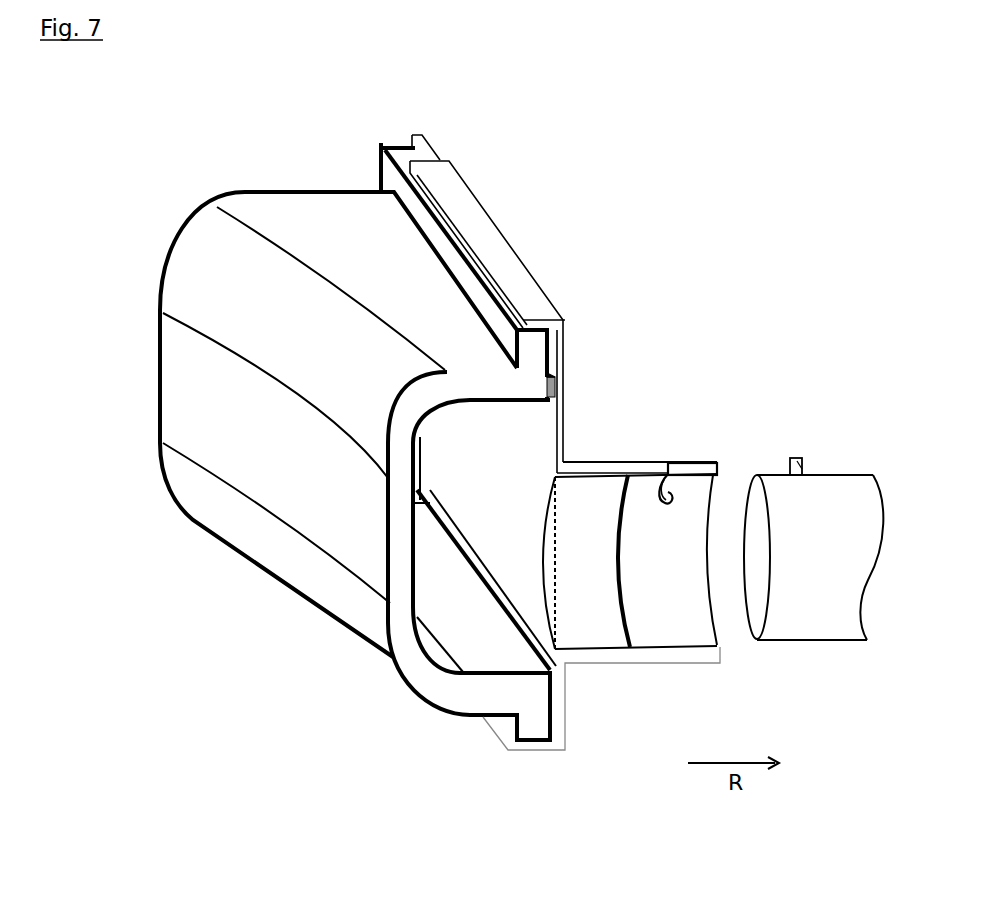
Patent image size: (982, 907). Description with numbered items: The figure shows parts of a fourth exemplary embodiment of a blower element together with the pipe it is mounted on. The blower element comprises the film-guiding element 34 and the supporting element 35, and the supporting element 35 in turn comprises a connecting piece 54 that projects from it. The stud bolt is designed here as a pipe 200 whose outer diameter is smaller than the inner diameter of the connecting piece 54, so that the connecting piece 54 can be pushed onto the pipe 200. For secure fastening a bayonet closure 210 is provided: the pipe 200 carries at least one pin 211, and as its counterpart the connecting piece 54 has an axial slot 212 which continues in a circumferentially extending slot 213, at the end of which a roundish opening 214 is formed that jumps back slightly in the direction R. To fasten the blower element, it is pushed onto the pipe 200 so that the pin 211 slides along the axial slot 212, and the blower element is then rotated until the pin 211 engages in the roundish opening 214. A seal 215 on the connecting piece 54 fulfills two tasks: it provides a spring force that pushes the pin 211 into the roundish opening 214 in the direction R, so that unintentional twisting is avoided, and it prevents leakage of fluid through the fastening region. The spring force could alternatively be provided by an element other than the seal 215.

The film-guiding element 34 is at (263, 212).
The supporting element 35 is at (562, 357).
The connecting piece 54 is at (595, 630).
The pipe 200 is at (802, 607).
The bayonet closure 210 is at (763, 437).
The pin 211 is at (800, 457).
The axial slot 212 is at (697, 462).
The circumferentially extending slot 213 is at (667, 470).
The roundish opening 214 is at (665, 508).
The seal 215 is at (628, 622).